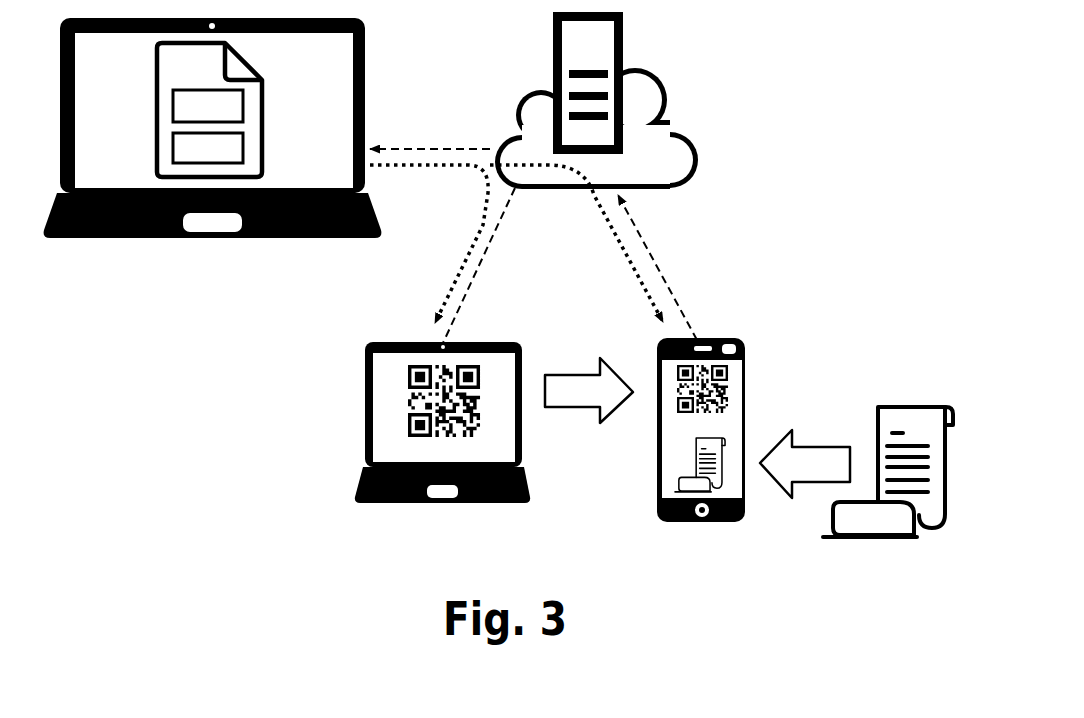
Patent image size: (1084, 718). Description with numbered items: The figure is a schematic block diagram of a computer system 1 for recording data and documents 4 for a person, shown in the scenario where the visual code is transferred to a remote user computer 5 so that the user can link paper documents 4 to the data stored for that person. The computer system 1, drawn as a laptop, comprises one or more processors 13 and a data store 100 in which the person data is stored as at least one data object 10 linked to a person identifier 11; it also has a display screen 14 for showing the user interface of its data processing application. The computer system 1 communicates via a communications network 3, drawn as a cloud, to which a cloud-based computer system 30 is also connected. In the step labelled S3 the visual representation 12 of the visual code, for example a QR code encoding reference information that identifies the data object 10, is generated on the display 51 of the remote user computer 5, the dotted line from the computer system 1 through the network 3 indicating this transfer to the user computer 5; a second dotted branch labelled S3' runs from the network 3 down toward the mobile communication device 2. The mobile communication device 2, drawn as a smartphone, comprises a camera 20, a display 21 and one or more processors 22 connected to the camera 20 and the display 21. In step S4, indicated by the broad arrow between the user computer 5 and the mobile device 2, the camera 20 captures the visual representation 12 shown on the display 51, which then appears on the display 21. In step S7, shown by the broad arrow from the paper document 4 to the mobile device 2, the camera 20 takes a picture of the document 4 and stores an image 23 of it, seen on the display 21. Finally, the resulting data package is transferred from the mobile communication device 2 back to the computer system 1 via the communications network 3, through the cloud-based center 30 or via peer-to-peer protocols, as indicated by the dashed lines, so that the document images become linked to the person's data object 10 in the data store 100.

The computer system 1 is at (231, 176).
The display screen 14 is at (342, 52).
The processor 13 is at (213, 222).
The data store 100 is at (214, 110).
The data object 10 is at (180, 108).
The person identifier 11 is at (178, 147).
The communications network 3 is at (678, 143).
The cloud-based computer system 30 is at (542, 60).
The remote user computer 5 is at (405, 426).
The display 51 is at (380, 382).
The visual representation 12 is at (397, 407).
The mobile communication device 2 is at (687, 446).
The camera 20 is at (740, 347).
The display 21 is at (735, 423).
The image 23 is at (677, 460).
The processor 22 is at (702, 517).
The document 4 is at (913, 537).
The visual representation generation step S3 is at (429, 244).
The step S3' data transmission S3' is at (576, 243).
The visual representation capture step S4 is at (572, 385).
The document capture step S7 is at (818, 462).